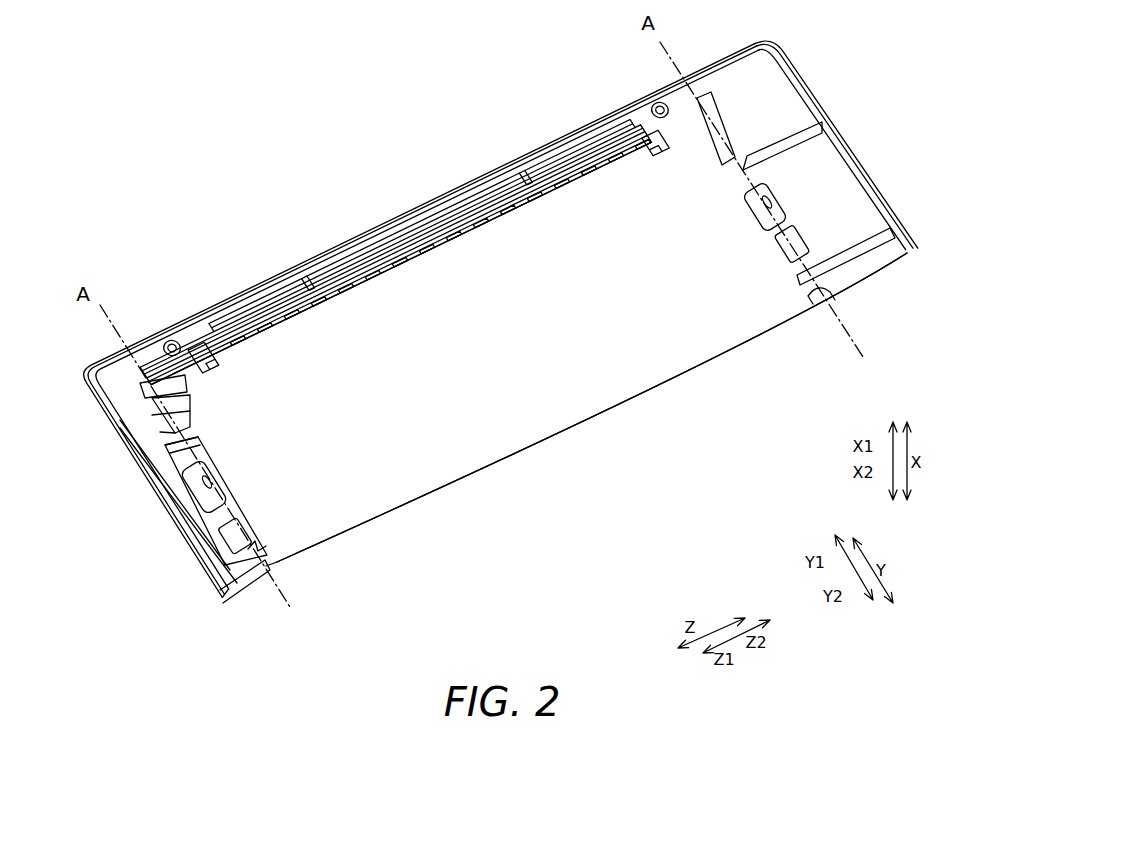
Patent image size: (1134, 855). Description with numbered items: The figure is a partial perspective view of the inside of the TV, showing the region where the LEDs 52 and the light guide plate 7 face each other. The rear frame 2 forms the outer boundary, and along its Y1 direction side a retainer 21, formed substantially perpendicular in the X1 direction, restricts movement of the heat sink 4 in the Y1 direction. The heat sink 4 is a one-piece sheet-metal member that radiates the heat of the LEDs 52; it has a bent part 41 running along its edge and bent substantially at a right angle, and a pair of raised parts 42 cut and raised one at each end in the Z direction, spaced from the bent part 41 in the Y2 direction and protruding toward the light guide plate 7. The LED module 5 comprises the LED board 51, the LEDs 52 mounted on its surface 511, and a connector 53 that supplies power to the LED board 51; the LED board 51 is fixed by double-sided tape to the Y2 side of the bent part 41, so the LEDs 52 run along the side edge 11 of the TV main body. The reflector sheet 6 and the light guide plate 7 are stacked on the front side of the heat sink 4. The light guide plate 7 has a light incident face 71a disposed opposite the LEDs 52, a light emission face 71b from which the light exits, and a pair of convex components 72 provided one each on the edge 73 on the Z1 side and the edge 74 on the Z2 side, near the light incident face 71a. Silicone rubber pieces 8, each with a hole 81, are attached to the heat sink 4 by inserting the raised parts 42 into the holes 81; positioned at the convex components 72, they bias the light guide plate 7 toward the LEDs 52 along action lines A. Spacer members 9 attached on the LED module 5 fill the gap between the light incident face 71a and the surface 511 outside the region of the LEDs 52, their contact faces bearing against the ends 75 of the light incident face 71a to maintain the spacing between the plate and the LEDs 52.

The rear frame 2 is at (123, 437).
The heat sink 4 is at (220, 555).
The LED module 5 is at (523, 245).
The reflector sheet 6 is at (170, 422).
The light guide plate 7 is at (428, 489).
The silicone rubber pieces 8 is at (222, 490).
The spacer members 9 is at (200, 350).
The side edge 11 is at (410, 213).
The retainer 21 is at (507, 190).
The bent part 41 is at (113, 418).
The raised parts 42 is at (220, 497).
The LED board 51 is at (455, 232).
The LEDs 52 is at (345, 298).
The connector 53 is at (175, 378).
The light incident face 71a is at (285, 320).
The light emission face 71b is at (463, 423).
The convex components 72 is at (747, 162).
The edge 73 is at (264, 558).
The edge 74 is at (812, 288).
The ends 75 is at (218, 372).
The holes 81 is at (225, 476).
The surface 511 is at (487, 220).